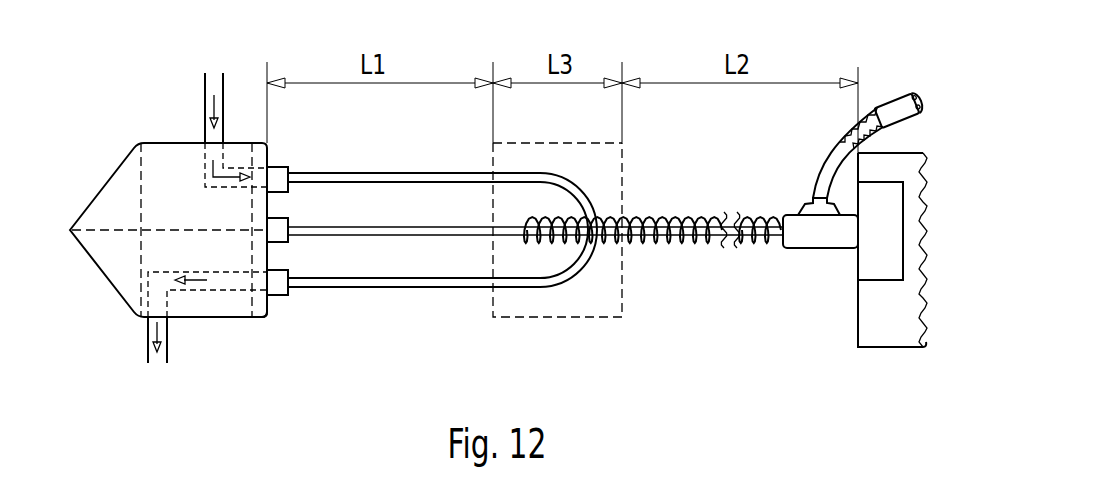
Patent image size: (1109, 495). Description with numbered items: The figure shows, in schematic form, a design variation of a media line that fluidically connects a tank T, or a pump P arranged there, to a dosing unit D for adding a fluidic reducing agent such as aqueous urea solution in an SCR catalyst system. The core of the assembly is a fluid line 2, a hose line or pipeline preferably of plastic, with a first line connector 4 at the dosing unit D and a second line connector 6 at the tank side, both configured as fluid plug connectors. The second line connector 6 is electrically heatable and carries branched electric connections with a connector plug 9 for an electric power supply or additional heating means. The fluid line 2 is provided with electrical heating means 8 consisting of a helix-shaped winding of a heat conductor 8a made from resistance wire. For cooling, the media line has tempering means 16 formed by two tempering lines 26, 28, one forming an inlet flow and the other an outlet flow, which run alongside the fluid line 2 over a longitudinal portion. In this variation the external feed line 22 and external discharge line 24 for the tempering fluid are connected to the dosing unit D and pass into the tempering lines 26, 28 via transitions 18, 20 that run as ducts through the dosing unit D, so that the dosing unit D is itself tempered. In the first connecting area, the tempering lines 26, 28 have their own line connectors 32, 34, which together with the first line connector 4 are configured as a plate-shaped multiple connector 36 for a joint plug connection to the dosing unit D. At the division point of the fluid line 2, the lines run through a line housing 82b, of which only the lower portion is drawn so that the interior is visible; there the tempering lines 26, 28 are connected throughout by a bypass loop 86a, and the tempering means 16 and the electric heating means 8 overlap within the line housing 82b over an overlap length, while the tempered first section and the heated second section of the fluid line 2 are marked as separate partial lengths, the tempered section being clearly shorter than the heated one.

The dosing unit D is at (118, 200).
The external feed line 22 is at (214, 90).
The external discharge line 24 is at (166, 325).
The transition 18 is at (270, 165).
The line connector 32 is at (279, 177).
The line connector 34 is at (278, 282).
The multiple connector 36 is at (258, 318).
The transition 20 is at (269, 297).
The line connector 4 is at (274, 230).
The tempering line 26 is at (429, 177).
The tempering line 28 is at (405, 283).
The tempering means 16 is at (458, 296).
The bypass loop 86a is at (569, 266).
The line housing 82b is at (527, 300).
The heat conductor 8a is at (668, 220).
The fluid line 2 is at (765, 228).
The electrical heating means 8 is at (784, 212).
The line connector 6 is at (835, 232).
The connector plug 9 is at (893, 110).
The pump P is at (880, 231).
The tank T is at (892, 250).